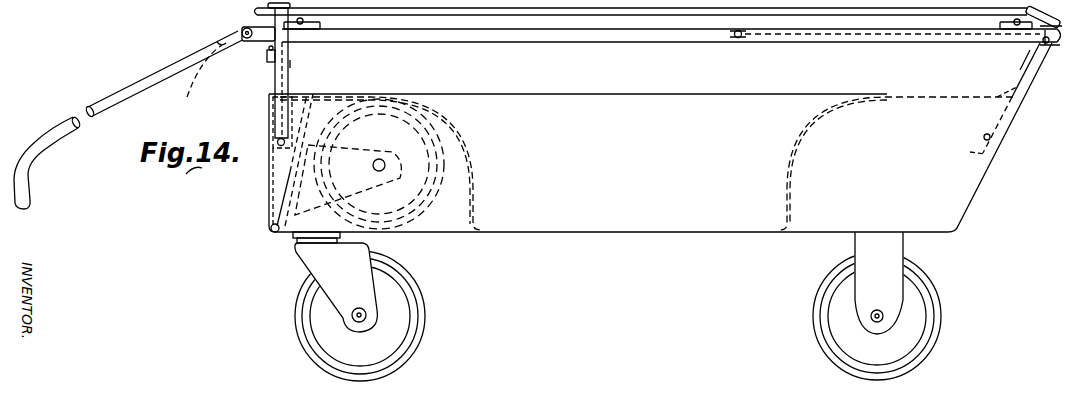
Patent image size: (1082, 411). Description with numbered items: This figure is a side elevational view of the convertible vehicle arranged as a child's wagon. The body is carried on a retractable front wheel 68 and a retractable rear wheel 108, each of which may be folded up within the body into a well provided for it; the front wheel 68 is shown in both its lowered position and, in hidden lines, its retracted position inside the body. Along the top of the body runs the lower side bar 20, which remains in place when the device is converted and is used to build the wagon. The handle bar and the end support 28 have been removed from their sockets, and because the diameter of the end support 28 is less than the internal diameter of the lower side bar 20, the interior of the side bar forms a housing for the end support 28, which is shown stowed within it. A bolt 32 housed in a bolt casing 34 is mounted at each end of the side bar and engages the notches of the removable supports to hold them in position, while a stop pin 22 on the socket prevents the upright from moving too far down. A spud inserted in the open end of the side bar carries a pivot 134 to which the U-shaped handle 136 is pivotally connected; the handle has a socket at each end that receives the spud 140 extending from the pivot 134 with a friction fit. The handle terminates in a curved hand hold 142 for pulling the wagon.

The lower side bar 20 is at (548, 35).
The stop pin 22 is at (281, 146).
The end support 28 is at (824, 43).
The bolt 32 is at (278, 26).
The bolt casing 34 is at (290, 64).
The front wheel 68 is at (403, 328).
The rear wheel 108 is at (917, 306).
The pivot 134 is at (246, 40).
The U-shaped handle 136 is at (137, 86).
The spud 140 is at (209, 76).
The curved hand hold 142 is at (29, 180).